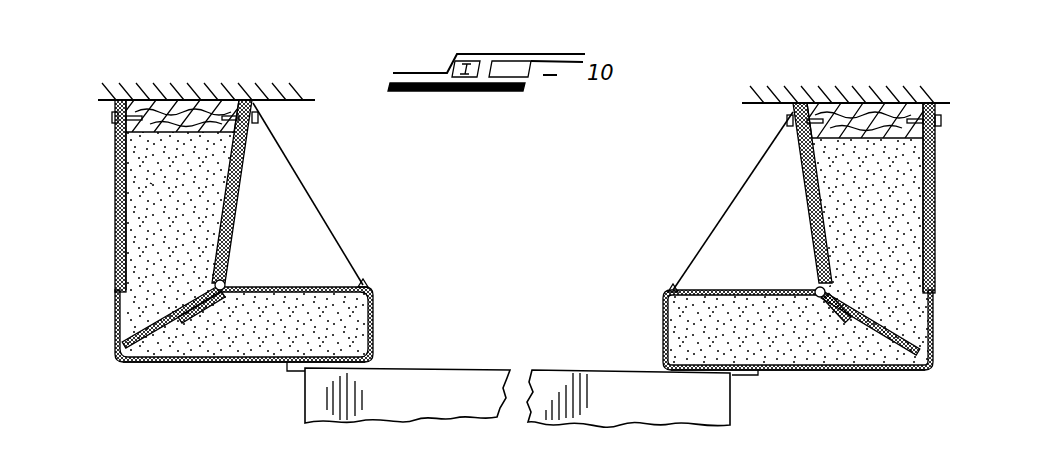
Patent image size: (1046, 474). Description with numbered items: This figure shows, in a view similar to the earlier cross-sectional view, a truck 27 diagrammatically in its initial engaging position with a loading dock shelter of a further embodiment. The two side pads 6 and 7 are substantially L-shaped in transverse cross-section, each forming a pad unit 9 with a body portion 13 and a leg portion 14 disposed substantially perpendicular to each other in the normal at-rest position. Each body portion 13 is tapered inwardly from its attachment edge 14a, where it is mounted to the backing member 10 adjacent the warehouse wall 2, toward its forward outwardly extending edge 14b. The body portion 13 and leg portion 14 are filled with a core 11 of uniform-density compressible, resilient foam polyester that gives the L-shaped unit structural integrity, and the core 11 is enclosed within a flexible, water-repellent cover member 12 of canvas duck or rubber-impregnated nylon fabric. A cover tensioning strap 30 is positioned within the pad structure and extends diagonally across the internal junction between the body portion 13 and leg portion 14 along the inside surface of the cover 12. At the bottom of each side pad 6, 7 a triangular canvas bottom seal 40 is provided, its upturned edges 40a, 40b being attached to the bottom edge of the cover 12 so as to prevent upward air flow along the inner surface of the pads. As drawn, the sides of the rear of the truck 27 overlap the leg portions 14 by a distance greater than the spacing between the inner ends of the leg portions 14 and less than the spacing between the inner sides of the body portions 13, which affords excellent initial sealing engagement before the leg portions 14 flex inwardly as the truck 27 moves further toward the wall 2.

The warehouse wall 2 is at (300, 100).
The side pad 6 is at (117, 236).
The side pad 7 is at (913, 236).
The pad unit 9 is at (150, 183).
The backing member 10 is at (917, 100).
The core 11 is at (138, 298).
The cover member 12 is at (132, 367).
The body portion 13 is at (140, 270).
The leg portion 14 is at (228, 342).
The attachment edge 14a is at (118, 103).
The forward edge 14b is at (222, 270).
The truck 27 is at (418, 395).
The cover tensioning strap 30 is at (162, 330).
The bottom seal 40 is at (307, 200).
The upturned edge 40a is at (238, 190).
The upturned edge 40b is at (362, 283).